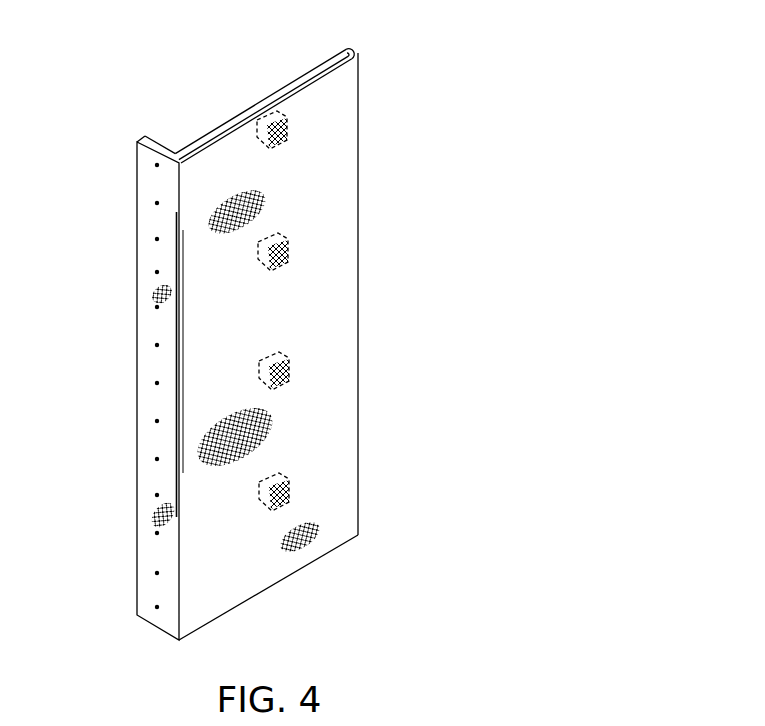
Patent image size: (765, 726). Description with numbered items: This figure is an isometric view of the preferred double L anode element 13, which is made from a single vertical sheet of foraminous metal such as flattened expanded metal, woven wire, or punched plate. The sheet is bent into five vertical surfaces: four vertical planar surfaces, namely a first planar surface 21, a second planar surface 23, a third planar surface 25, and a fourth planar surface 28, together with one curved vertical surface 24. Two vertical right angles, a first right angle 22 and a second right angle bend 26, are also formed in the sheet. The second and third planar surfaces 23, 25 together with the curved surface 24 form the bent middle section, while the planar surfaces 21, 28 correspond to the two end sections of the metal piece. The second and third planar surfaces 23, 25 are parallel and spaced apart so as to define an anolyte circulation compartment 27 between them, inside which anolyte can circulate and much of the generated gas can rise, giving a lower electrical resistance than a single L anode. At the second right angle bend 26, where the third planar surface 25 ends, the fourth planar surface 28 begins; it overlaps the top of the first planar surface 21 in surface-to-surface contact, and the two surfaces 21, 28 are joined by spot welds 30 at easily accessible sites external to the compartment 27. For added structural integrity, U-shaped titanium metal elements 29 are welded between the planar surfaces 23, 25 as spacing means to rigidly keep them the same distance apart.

The double L anode element 13 is at (355, 618).
The first vertical planar surface 21 is at (137, 415).
The first vertical right angle 22 is at (180, 609).
The second vertical planar surface 23 is at (328, 78).
The curved vertical surface 24 is at (348, 49).
The third vertical planar surface 25 is at (256, 93).
The second right angle bend 26 is at (164, 147).
The anolyte circulation compartment 27 is at (300, 78).
The fourth vertical planar surface 28 is at (151, 137).
The U-shaped titanium metal elements 29 is at (284, 236).
The spot welds 30 is at (152, 297).